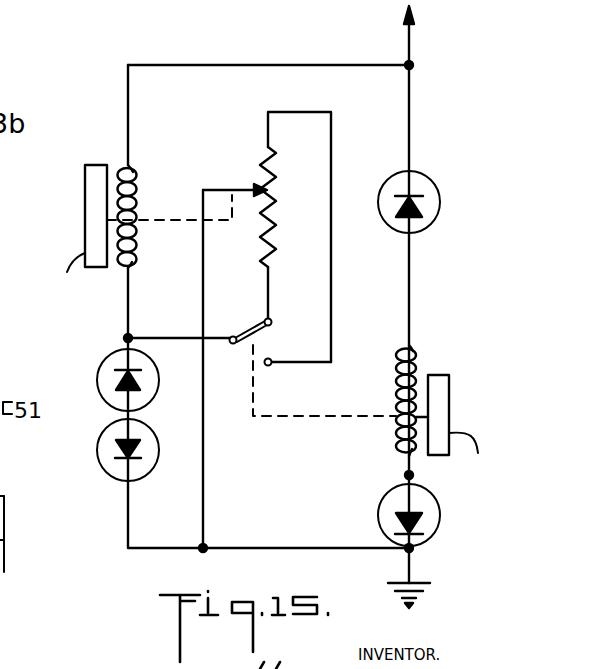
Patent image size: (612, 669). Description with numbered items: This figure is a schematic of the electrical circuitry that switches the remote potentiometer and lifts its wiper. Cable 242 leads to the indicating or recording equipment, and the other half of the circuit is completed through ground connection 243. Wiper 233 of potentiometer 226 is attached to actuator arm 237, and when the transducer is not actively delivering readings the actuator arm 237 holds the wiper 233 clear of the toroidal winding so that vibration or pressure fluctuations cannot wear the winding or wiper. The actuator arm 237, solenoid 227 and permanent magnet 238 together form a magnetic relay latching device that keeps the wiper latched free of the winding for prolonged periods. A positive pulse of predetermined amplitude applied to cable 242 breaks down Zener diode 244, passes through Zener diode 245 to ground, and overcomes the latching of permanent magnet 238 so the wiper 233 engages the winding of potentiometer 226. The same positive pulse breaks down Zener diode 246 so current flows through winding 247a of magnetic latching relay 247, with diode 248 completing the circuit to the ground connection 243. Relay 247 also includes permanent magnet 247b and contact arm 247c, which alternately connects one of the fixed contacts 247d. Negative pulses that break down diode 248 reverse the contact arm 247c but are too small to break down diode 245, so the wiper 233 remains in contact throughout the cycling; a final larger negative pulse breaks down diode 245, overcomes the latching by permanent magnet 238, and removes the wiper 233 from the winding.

The potentiometer 226 is at (277, 181).
The solenoid 227 is at (121, 166).
The wiper 233 is at (254, 189).
The actuator arm 237 is at (172, 222).
The permanent magnet 238 is at (90, 229).
The cable 242 is at (412, 43).
The ground connection 243 is at (410, 563).
The Zener diode 244 is at (103, 374).
The Zener diode 245 is at (118, 468).
The Zener diode 246 is at (440, 203).
The magnetic latching relay 247 is at (382, 396).
The winding 247a is at (411, 352).
The permanent magnet 247b is at (470, 362).
The contact arm 247c is at (250, 334).
The fixed contacts 247d is at (274, 358).
The diode 248 is at (440, 510).